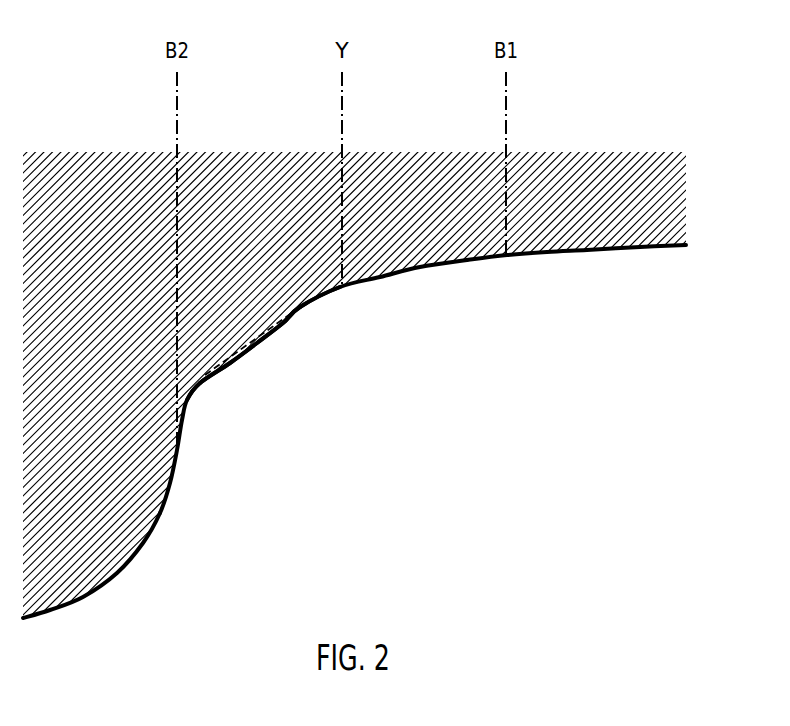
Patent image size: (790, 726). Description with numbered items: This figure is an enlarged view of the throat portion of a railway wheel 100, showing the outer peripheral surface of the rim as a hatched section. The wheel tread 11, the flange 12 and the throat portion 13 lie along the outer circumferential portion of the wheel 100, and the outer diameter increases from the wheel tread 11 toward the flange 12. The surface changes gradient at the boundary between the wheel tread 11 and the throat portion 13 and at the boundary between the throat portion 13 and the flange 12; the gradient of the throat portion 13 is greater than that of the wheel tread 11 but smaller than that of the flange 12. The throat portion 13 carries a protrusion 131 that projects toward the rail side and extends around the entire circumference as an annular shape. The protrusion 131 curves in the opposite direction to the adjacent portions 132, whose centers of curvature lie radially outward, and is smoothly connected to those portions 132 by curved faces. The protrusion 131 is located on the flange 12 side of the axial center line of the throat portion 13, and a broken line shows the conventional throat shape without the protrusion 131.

The wheel 100 is at (668, 143).
The wheel tread 11 is at (616, 254).
The flange 12 is at (75, 601).
The throat portion 13 is at (312, 313).
The protrusion 131 is at (256, 342).
The portions adjacent to the protrusion 132 is at (186, 415).